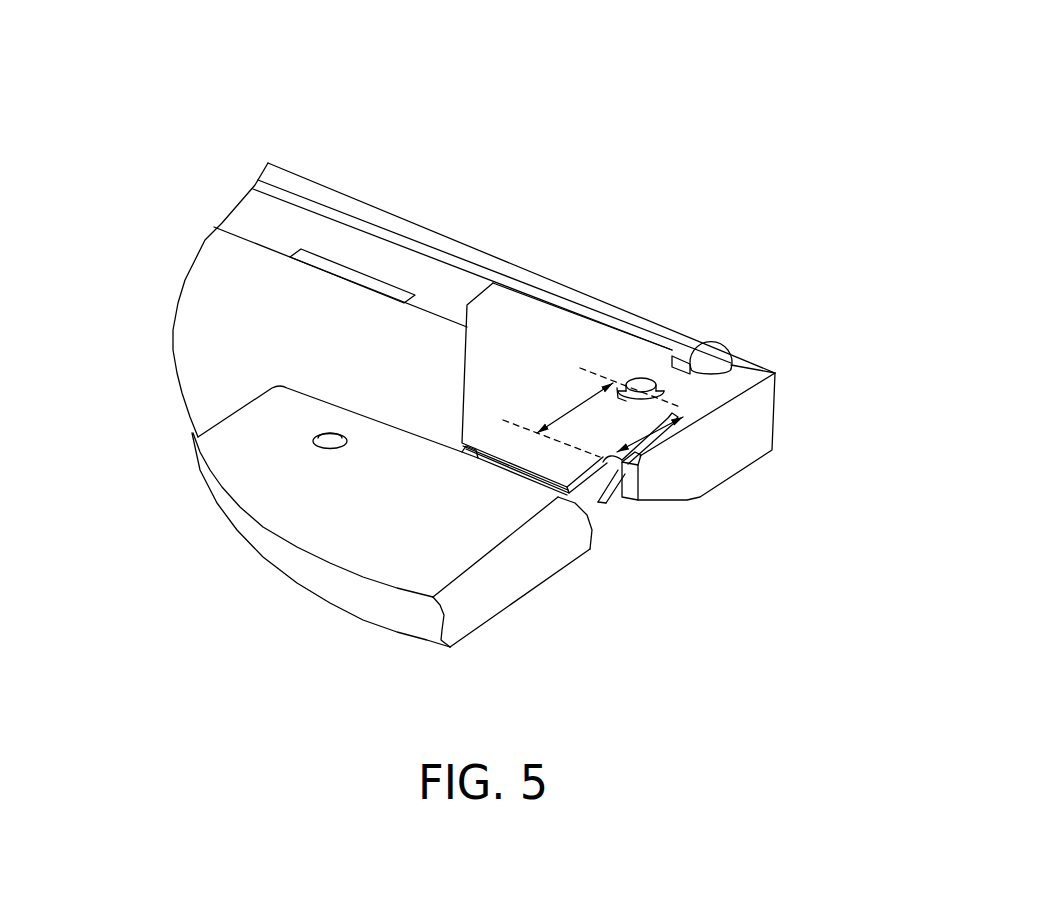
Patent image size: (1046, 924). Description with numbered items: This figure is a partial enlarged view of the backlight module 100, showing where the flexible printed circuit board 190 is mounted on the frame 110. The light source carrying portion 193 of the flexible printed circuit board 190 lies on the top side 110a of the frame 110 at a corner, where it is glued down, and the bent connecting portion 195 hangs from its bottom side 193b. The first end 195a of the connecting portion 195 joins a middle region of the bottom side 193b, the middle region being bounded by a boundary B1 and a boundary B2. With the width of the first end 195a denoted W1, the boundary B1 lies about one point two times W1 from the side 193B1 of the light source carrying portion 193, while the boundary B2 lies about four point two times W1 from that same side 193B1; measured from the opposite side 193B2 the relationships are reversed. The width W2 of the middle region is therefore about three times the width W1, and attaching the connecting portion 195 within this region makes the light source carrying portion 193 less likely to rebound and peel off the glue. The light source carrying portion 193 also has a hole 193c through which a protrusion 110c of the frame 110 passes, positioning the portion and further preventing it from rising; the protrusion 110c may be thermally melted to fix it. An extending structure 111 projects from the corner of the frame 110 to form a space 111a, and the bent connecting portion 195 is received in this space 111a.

The backlight module 100 is at (918, 58).
The frame 110 is at (318, 173).
The top side 110a is at (377, 215).
The protrusion 110c is at (640, 385).
The extending structure 111 is at (648, 478).
The space 111a is at (735, 371).
The flexible printed circuit board 190 is at (237, 397).
The light source carrying portion 193 is at (502, 305).
The side of the light source carrying portion 193B1 is at (518, 474).
The side of the light source carrying portion 193B2 is at (565, 305).
The bottom side 193b is at (617, 515).
The hole 193c is at (665, 380).
The connecting portion 195 is at (593, 487).
The first end 195a is at (765, 441).
The boundary B1 is at (538, 426).
The boundary B2 is at (614, 373).
The width of the first end W1 is at (650, 432).
The width of the middle region W2 is at (573, 405).